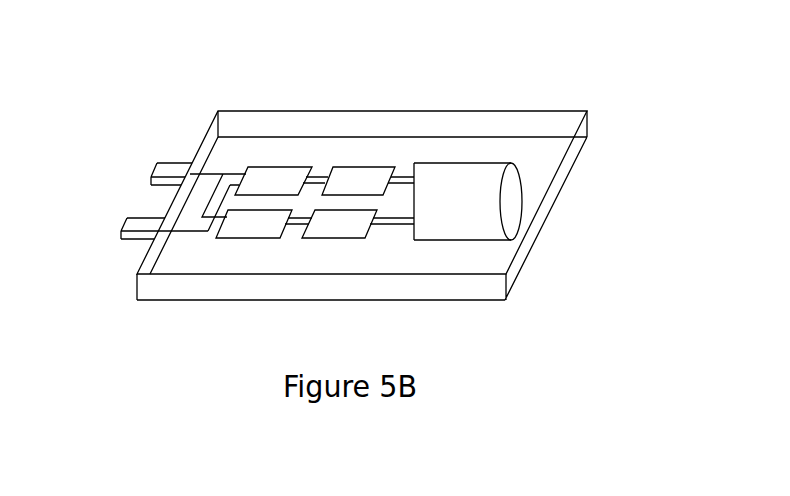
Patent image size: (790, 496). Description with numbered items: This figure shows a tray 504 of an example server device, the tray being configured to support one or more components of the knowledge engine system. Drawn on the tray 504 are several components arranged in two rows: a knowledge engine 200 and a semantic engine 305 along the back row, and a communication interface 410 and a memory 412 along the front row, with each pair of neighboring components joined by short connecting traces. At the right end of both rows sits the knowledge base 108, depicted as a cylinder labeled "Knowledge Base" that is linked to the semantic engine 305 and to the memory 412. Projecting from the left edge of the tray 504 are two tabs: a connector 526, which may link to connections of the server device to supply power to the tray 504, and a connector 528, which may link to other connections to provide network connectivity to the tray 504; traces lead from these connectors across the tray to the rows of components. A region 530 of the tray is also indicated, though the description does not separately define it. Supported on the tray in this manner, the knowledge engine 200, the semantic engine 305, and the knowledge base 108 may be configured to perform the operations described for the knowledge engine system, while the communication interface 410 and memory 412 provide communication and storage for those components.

The tray 504 is at (381, 192).
The board top surface 530 is at (533, 193).
The connector 526 is at (175, 163).
The connector 528 is at (148, 218).
The knowledge engine 200 is at (253, 167).
The semantic engine 305 is at (341, 167).
The communication interface 410 is at (220, 239).
The memory 412 is at (310, 239).
The knowledge base 108 is at (440, 163).